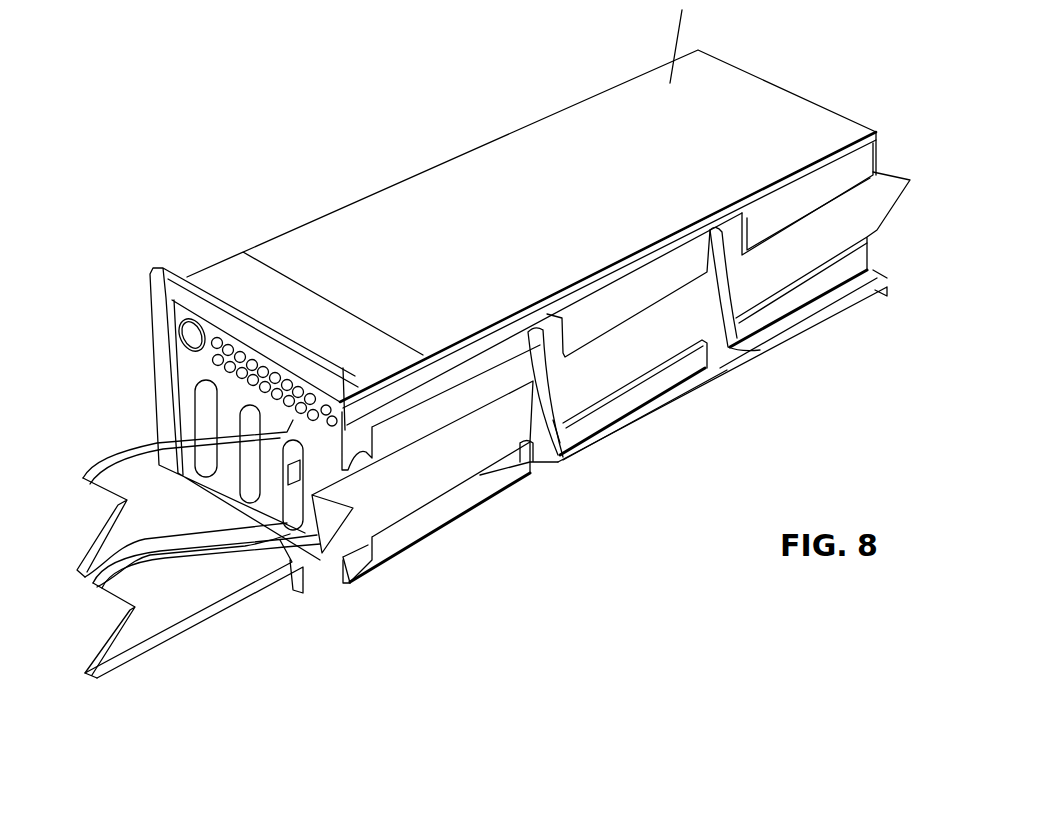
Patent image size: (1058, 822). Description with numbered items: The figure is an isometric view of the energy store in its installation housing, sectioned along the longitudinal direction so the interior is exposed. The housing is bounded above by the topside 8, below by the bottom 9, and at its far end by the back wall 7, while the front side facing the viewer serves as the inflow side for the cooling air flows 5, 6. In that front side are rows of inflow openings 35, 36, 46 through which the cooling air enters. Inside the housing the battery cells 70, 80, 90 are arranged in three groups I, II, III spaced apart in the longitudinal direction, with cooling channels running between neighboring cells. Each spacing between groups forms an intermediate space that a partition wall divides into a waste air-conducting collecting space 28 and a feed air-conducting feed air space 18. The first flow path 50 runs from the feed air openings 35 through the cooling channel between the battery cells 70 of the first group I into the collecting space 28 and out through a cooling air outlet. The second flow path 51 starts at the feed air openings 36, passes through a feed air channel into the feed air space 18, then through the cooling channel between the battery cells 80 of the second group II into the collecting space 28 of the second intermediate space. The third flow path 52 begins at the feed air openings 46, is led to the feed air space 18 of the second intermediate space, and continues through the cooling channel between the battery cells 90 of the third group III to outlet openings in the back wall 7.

The cooling air flow 5 is at (158, 613).
The cooling air flow 6 is at (147, 508).
The back wall 7 is at (867, 128).
The topside 8 is at (437, 222).
The bottom 9 is at (348, 585).
The feed air space 18 is at (715, 257).
The collecting space 28 is at (561, 418).
The inflow openings 35 is at (207, 425).
The inflow openings 36 is at (213, 358).
The inflow openings 46 is at (193, 325).
The first flow path 50 is at (473, 442).
The second flow path 51 is at (670, 333).
The third flow path 52 is at (883, 277).
The battery cells 70 is at (477, 488).
The battery cells 80 is at (665, 373).
The battery cells 90 is at (832, 275).
The first group I is at (445, 507).
The second group II is at (642, 380).
The third group III is at (810, 280).